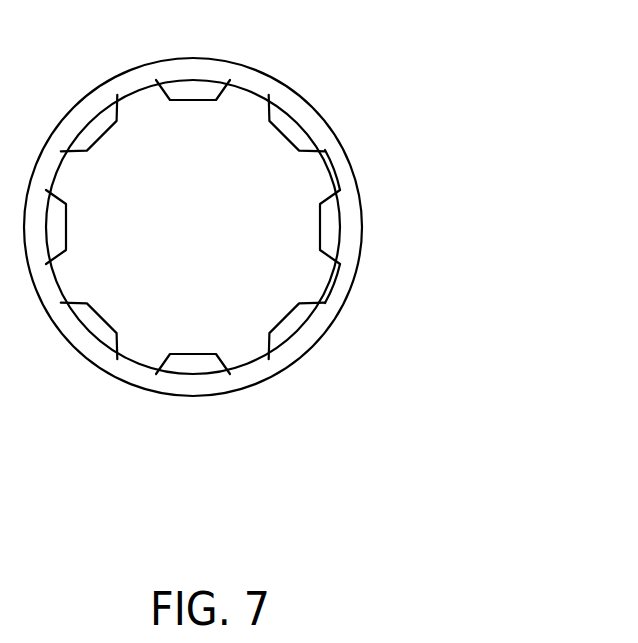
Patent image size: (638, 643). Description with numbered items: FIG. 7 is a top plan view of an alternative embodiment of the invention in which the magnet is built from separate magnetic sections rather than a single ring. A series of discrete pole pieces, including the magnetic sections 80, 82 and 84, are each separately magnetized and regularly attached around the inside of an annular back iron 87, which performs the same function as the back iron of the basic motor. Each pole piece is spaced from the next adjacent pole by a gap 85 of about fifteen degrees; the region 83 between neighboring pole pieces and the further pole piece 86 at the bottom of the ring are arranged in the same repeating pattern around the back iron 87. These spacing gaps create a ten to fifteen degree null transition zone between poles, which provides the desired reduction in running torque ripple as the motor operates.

The magnetic section 80 is at (292, 138).
The magnetic section 82 is at (332, 228).
The recess between teeth 83 is at (322, 178).
The magnetic section 84 is at (293, 332).
The gap 85 is at (322, 285).
The tooth 86 is at (202, 365).
The back iron 87 is at (192, 385).